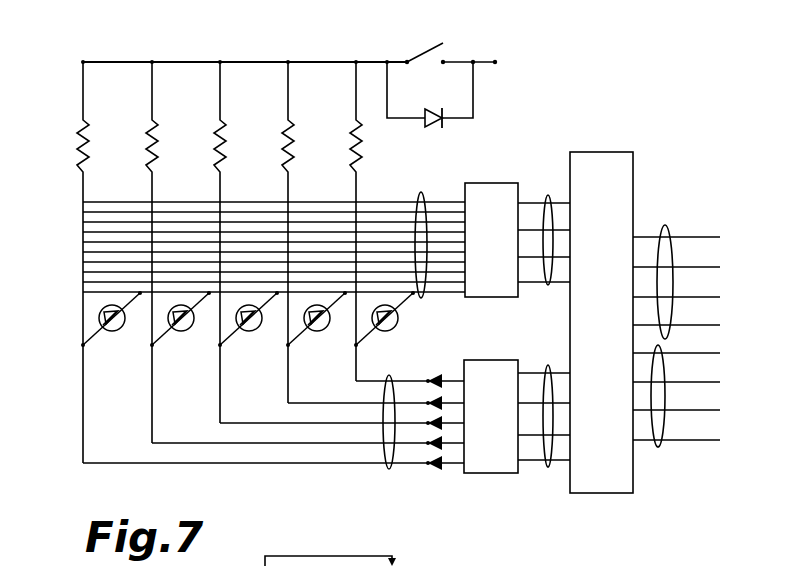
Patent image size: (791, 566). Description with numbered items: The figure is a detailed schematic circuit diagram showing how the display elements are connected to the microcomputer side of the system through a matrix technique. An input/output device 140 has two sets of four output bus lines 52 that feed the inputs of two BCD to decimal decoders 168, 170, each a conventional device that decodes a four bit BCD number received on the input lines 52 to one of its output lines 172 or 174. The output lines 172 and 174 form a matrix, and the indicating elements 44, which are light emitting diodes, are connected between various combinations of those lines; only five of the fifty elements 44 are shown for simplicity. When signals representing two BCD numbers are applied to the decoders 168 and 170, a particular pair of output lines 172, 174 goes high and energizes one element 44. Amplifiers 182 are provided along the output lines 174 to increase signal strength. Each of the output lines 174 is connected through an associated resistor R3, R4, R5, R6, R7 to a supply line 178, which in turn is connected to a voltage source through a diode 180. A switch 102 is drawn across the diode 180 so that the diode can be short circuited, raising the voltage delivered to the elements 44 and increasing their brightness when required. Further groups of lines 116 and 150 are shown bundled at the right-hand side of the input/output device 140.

The supply line 178 is at (229, 62).
The switch 102 is at (452, 48).
The diode 180 is at (438, 124).
The resistor R3 is at (62, 262).
The resistor R4 is at (133, 252).
The resistor R5 is at (202, 242).
The resistor R6 is at (270, 232).
The resistor R7 is at (339, 221).
The indicating elements 44 is at (121, 328).
The amplifiers 182 is at (435, 473).
The BCD to decimal decoder 168 is at (500, 297).
The BCD to decimal decoder 170 is at (500, 473).
The output lines 172 is at (421, 298).
The output lines 174 is at (387, 469).
The input/output device 140 is at (602, 152).
The output bus lines 52 is at (548, 195).
The bus lines 116 is at (667, 225).
The bus lines 150 is at (660, 447).